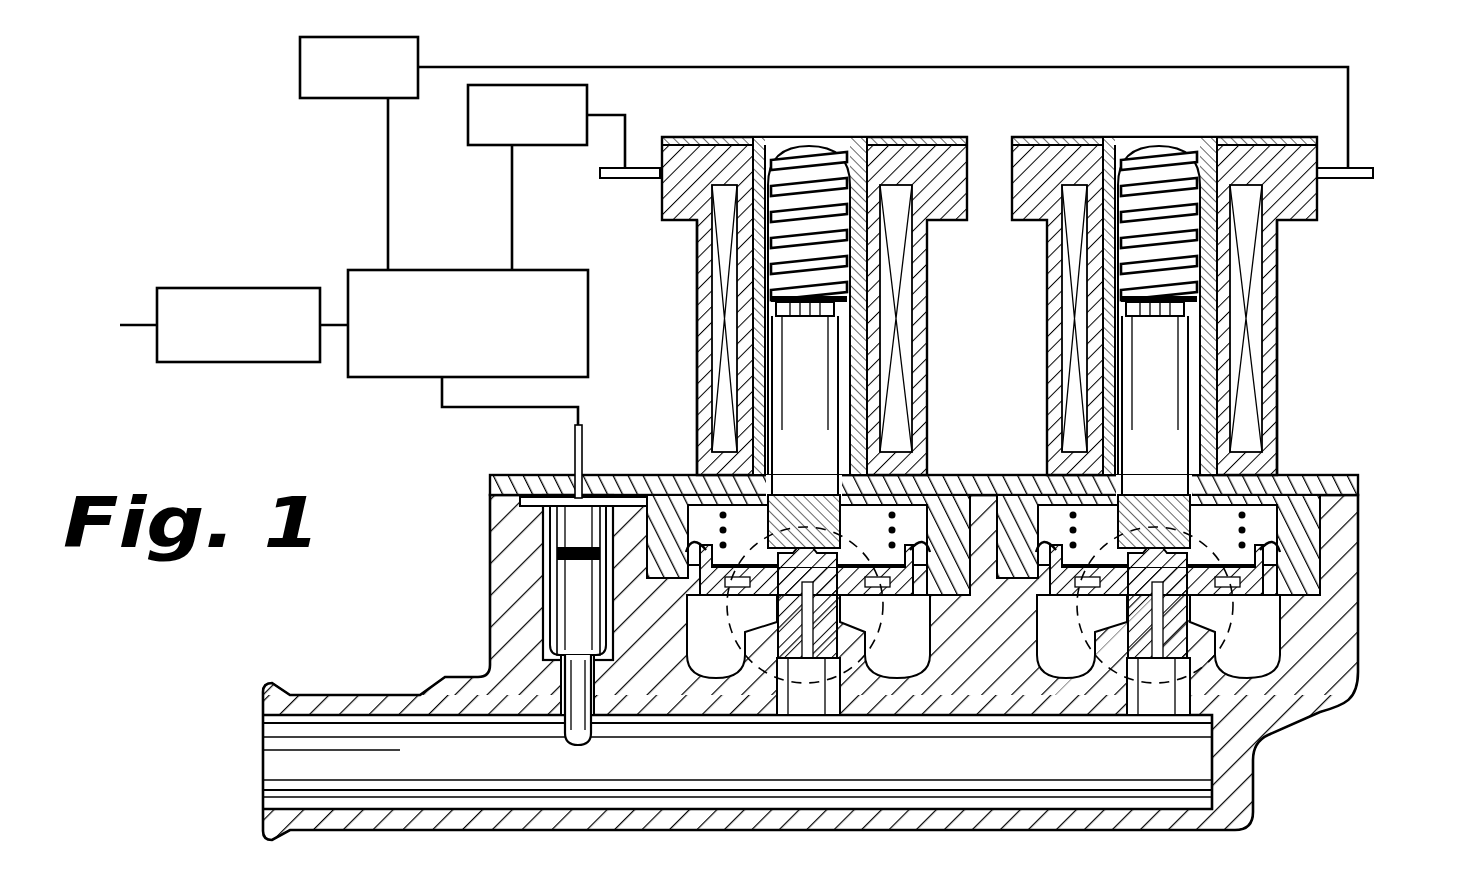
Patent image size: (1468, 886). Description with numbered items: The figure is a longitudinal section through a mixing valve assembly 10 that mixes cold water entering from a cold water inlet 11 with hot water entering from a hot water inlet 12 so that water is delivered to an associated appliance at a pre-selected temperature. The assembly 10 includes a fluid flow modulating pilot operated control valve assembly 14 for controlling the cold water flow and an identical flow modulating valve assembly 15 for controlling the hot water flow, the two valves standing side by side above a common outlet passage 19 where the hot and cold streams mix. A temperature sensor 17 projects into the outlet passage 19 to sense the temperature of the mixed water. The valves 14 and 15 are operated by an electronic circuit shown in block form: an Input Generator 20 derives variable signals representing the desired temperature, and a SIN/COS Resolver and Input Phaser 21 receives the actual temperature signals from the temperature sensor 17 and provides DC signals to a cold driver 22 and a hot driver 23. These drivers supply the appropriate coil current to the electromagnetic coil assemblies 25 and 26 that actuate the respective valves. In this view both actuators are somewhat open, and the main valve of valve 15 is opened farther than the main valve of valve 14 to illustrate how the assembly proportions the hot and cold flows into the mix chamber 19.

The mixing valve assembly 10 is at (861, 488).
The cold water inlet 11 is at (697, 640).
The hot water inlet 12 is at (1055, 630).
The pilot operated control valve assembly 14 is at (677, 449).
The flow modulating valve assembly 15 is at (1287, 458).
The temperature sensor 17 is at (562, 608).
The outlet passage 19 is at (496, 774).
The Input Generator 20 is at (202, 288).
The SIN/COS Resolver and Input Phaser 21 is at (365, 270).
The cold driver 22 is at (468, 121).
The hot driver 23 is at (300, 65).
The electromagnetic coil assembly 25 is at (697, 283).
The electromagnetic coil assembly 26 is at (1270, 318).